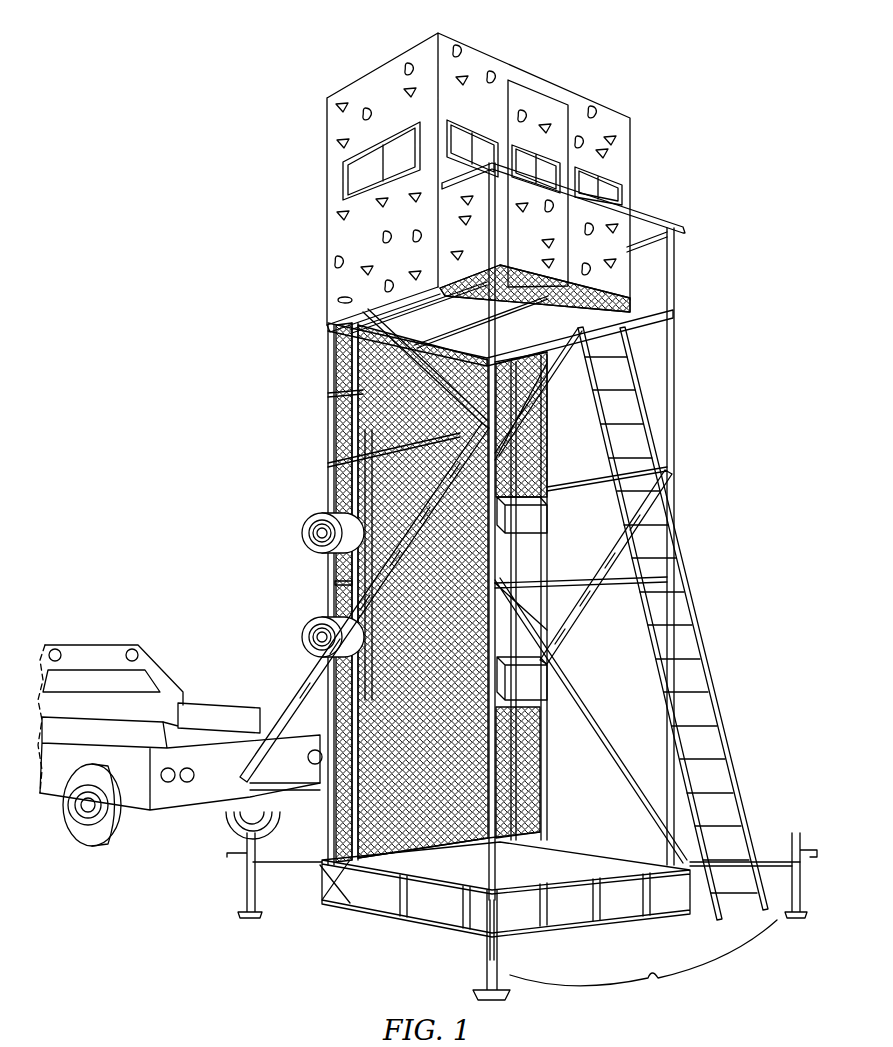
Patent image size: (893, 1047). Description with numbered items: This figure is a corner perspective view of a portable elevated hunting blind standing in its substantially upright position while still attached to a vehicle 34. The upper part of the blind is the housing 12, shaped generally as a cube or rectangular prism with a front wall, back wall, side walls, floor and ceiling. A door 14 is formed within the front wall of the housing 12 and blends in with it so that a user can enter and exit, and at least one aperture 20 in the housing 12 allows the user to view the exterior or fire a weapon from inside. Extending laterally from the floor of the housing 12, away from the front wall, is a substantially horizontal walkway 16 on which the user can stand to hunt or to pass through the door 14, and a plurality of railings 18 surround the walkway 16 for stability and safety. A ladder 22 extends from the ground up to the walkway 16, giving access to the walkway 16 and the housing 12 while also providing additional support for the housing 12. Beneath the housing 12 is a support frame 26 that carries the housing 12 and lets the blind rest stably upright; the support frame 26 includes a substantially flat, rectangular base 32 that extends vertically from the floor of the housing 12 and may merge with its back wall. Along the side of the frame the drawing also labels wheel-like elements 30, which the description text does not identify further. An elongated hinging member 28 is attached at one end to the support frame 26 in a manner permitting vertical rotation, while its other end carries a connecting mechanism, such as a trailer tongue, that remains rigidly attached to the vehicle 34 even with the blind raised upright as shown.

The housing 12 is at (350, 238).
The door 14 is at (537, 100).
The walkway 16 is at (627, 310).
The railings 18 is at (648, 215).
The aperture 20 is at (360, 173).
The ladder 22 is at (703, 633).
The support frame 26 is at (522, 918).
The hinging member 28 is at (298, 677).
The wheels 30 is at (303, 513).
The base 32 is at (335, 408).
The vehicle 34 is at (163, 803).